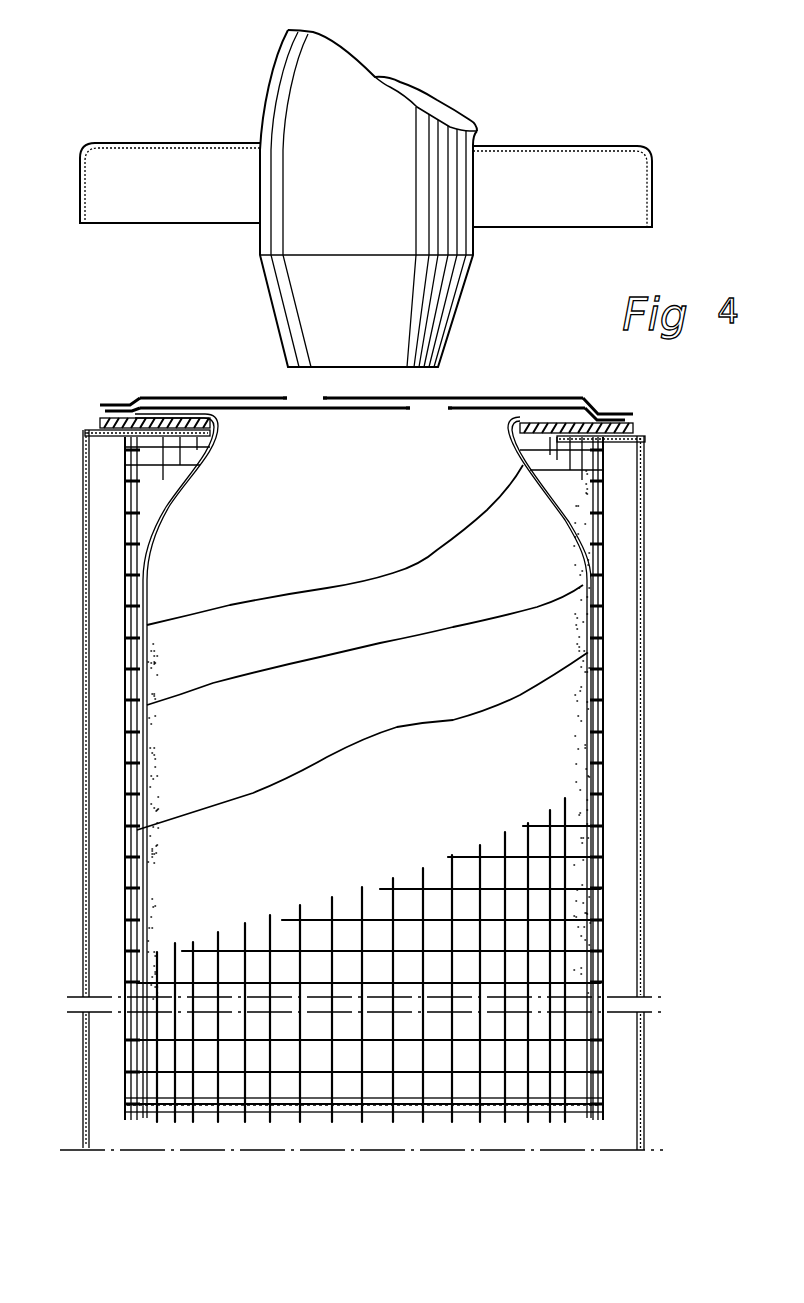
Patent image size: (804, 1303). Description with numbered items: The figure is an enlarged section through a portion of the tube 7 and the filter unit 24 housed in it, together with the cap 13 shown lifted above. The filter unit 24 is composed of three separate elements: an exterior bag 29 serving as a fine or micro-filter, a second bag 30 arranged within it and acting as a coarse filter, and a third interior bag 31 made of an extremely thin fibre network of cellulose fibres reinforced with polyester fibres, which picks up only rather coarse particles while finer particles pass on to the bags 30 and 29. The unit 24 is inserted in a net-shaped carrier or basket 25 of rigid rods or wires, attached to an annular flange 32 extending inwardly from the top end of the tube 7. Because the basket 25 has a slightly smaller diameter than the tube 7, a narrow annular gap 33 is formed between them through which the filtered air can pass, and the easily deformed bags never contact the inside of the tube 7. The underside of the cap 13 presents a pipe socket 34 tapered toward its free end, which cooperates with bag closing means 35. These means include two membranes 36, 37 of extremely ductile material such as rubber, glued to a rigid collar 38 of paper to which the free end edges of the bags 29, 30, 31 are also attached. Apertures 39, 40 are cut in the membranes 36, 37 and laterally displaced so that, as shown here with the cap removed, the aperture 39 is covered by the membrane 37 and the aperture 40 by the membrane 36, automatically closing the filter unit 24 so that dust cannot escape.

The tube 7 is at (643, 797).
The cap 13 is at (165, 143).
The filter unit 24 is at (124, 872).
The rigid net / basket 25 is at (409, 880).
The exterior bag 29 is at (363, 768).
The second bag 30 is at (367, 658).
The interior bag 31 is at (395, 592).
The annular flange 32 is at (620, 445).
The annular gap 33 is at (627, 645).
The pipe socket 34 is at (458, 303).
The bag closing means 35 is at (540, 397).
The membrane 36 is at (235, 398).
The membrane 37 is at (235, 408).
The rigid collar 38 is at (97, 422).
The aperture 39 is at (310, 397).
The aperture 40 is at (428, 410).